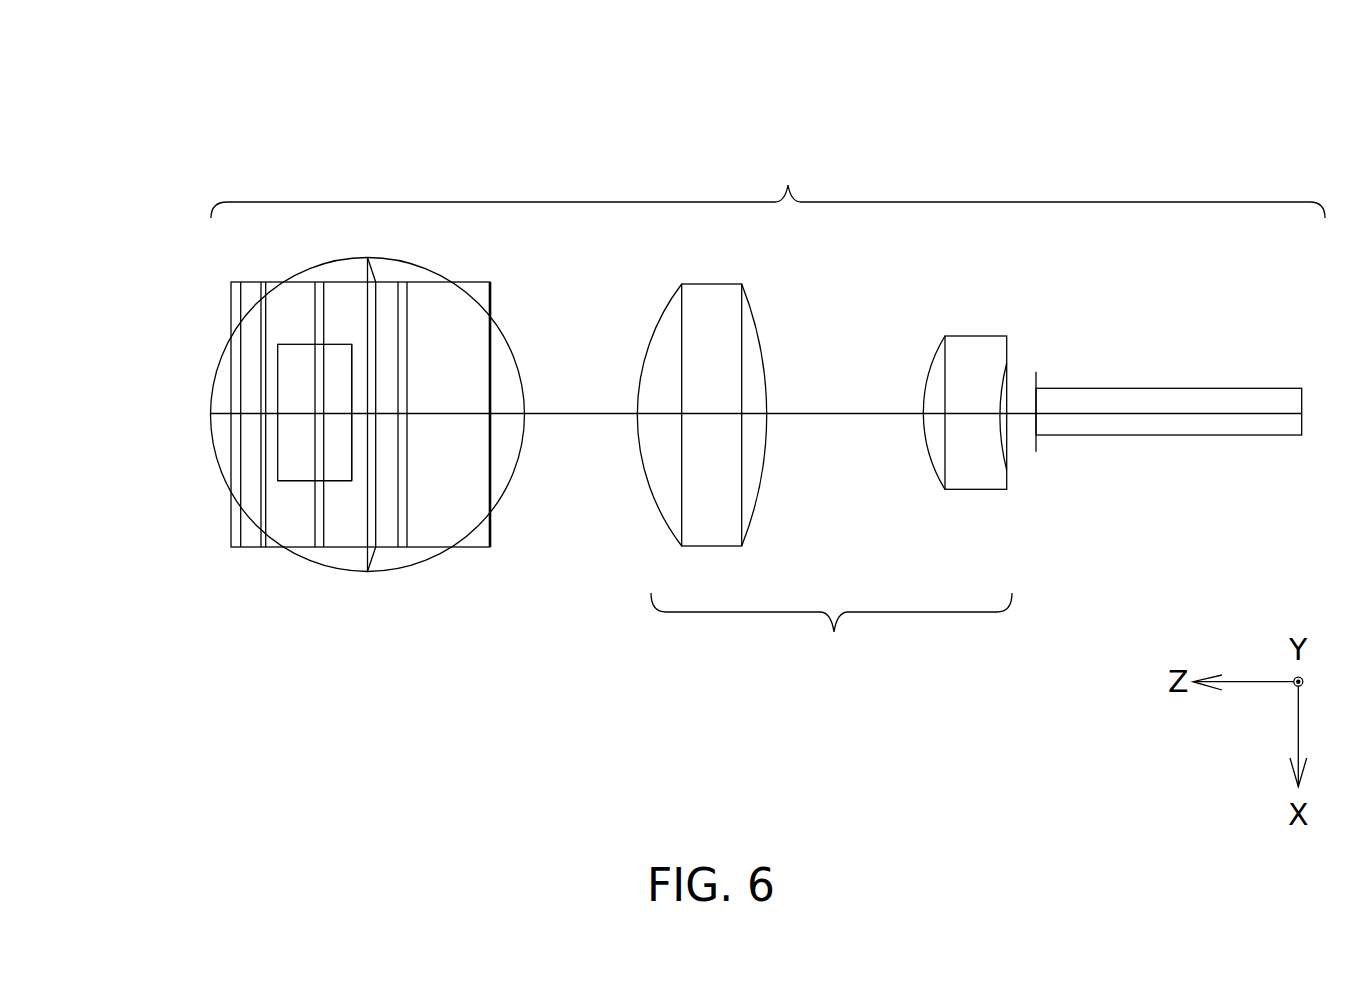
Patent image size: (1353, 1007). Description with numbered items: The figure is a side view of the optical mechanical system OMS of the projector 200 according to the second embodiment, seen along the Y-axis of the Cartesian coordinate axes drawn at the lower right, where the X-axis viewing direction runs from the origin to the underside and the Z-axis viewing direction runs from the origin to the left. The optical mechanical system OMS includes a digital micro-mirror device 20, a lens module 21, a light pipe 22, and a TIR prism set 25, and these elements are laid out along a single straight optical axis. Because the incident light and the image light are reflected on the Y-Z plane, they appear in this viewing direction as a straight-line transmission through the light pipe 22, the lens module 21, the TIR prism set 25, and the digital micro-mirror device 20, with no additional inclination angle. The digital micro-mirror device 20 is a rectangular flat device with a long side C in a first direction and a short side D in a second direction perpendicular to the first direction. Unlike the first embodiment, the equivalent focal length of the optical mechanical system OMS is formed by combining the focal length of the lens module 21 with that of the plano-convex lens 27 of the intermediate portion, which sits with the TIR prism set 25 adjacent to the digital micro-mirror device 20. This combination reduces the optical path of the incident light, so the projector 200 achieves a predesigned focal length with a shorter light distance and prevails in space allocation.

The projector 200 is at (225, 130).
The optical mechanical system OMS is at (768, 179).
The digital micro-mirror device 20 is at (294, 365).
The lens module 21 is at (824, 478).
The light pipe 22 is at (1168, 388).
The TIR prism set 25 is at (231, 525).
The plano-convex lens 27 is at (410, 568).
The short side D is at (294, 481).
The long side C is at (352, 467).